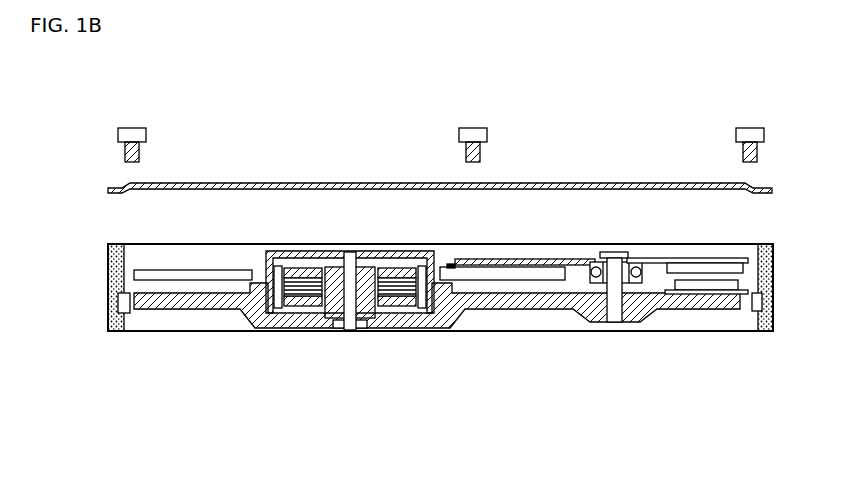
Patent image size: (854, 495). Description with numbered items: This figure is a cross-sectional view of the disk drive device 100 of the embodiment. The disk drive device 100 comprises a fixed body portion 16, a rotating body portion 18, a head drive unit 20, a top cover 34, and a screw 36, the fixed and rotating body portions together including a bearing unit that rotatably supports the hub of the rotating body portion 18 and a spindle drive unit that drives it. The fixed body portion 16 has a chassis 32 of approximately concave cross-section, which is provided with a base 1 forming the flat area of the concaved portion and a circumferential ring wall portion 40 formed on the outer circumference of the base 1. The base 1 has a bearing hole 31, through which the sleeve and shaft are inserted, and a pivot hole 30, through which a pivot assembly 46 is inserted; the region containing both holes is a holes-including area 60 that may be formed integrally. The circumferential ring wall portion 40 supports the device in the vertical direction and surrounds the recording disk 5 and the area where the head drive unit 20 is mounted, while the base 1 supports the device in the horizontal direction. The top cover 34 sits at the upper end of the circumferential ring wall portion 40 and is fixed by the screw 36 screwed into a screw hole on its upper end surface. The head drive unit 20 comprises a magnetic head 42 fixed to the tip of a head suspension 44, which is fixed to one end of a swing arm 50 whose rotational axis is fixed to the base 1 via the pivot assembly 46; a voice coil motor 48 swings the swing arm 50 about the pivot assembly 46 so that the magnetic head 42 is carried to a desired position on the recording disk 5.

The disk drive device 100 is at (458, 454).
The base 1 is at (476, 312).
The recording disk 5 is at (181, 270).
The fixed body portion 16 is at (238, 356).
The rotating body portion 18 is at (262, 237).
The head drive unit 20 is at (687, 245).
The pivot hole 30 is at (606, 296).
The bearing hole 31 is at (318, 330).
The chassis 32 is at (145, 320).
The top cover 34 is at (590, 182).
The screw 36 is at (132, 128).
The circumferential ring wall portion 40 is at (108, 259).
The magnetic head 42 is at (449, 264).
The head suspension 44 is at (492, 259).
The pivot assembly 46 is at (580, 268).
The voice coil motor 48 is at (713, 258).
The swing arm 50 is at (545, 262).
The holes-including area 60 is at (544, 310).